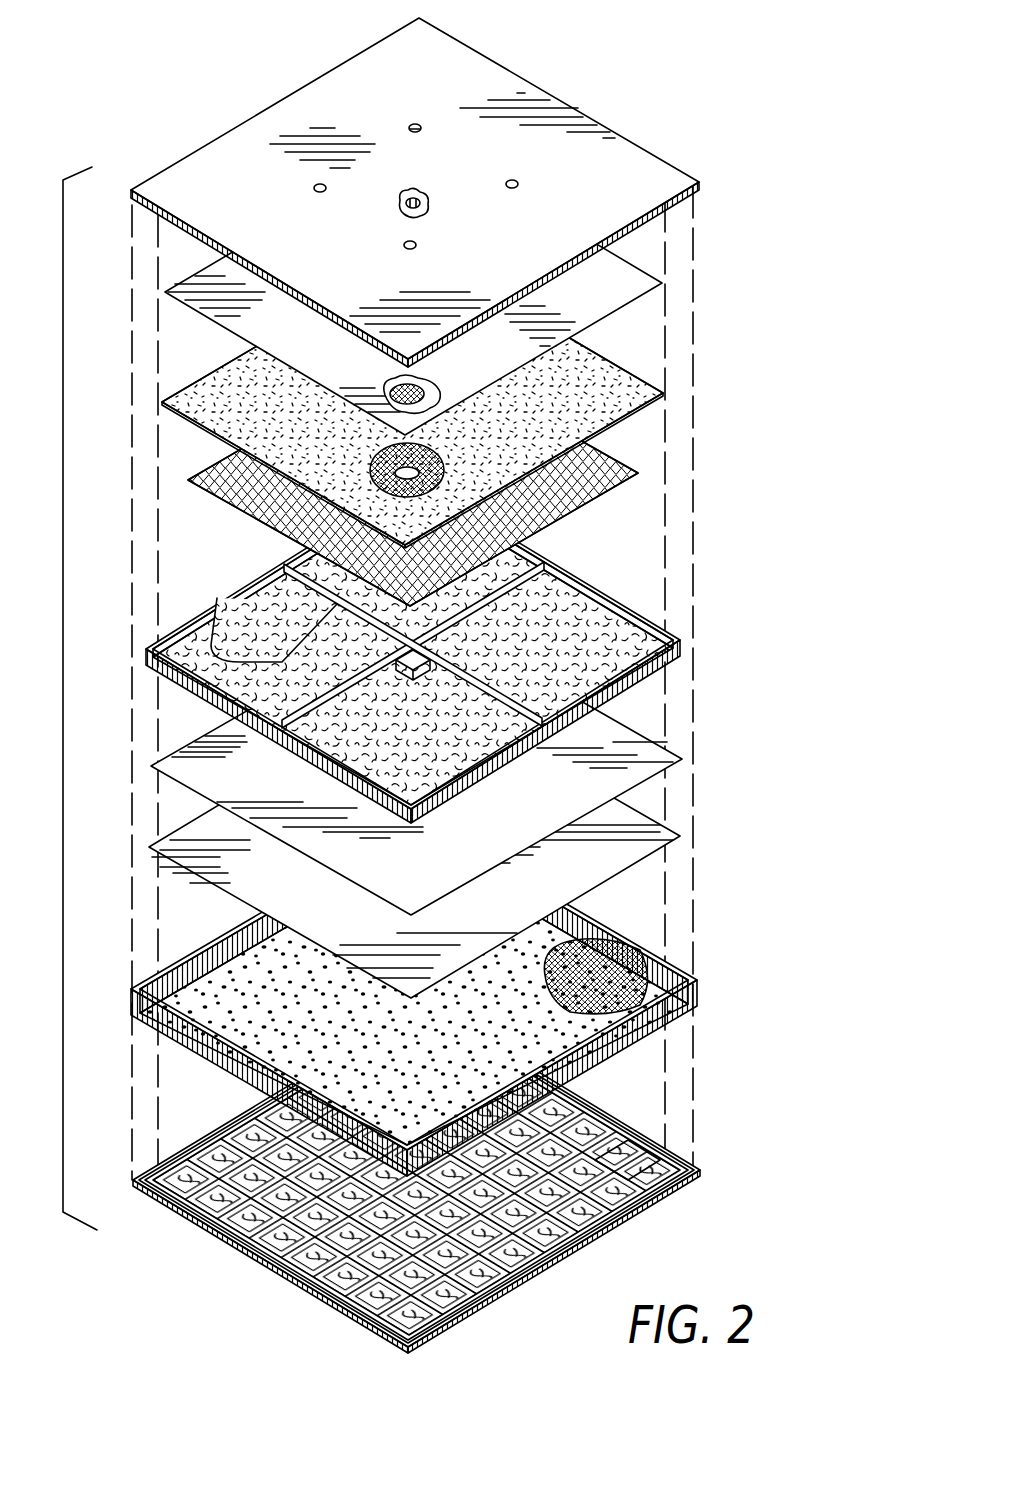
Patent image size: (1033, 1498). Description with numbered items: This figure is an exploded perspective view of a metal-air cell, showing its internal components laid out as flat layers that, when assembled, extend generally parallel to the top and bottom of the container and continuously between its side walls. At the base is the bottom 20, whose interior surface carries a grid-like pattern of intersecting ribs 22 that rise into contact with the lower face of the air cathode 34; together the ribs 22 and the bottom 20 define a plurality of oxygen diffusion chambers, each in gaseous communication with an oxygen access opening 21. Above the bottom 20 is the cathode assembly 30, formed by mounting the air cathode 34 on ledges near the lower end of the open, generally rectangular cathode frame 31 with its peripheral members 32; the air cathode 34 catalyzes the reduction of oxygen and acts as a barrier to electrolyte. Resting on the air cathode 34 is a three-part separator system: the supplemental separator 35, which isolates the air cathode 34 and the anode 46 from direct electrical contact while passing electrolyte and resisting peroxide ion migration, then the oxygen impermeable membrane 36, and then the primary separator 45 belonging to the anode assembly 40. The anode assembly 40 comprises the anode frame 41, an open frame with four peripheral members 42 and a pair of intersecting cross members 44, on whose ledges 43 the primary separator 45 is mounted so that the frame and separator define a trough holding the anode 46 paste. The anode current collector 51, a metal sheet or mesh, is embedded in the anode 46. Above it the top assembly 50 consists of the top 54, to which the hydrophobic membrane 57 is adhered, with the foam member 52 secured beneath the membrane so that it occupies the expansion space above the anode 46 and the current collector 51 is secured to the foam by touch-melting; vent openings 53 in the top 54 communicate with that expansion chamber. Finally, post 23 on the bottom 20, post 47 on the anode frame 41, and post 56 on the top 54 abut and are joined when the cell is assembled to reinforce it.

The bottom 20 is at (420, 1178).
The oxygen access opening 21 is at (625, 1170).
The ribs 22 is at (580, 1197).
The post 23 is at (287, 1133).
The cathode assembly 30 is at (425, 997).
The cathode frame 31 is at (698, 988).
The peripheral members 32 is at (665, 1014).
The air cathode 34 is at (545, 1042).
The supplemental separator 35 is at (636, 858).
The oxygen impermeable membrane 36 is at (656, 772).
The anode assembly 40 is at (414, 651).
The anode frame 41 is at (673, 636).
The peripheral members 42 is at (643, 677).
The ledges 43 is at (258, 596).
The cross members 44 is at (536, 696).
The primary separator 45 is at (226, 642).
The anode 46 is at (613, 616).
The post 47 is at (413, 648).
The top assembly 50 is at (387, 312).
The anode current collector 51 is at (618, 490).
The foam member 52 is at (632, 415).
The vent openings 53 is at (520, 185).
The top 54 is at (415, 192).
The post 56 is at (398, 212).
The hydrophobic membrane 57 is at (627, 302).